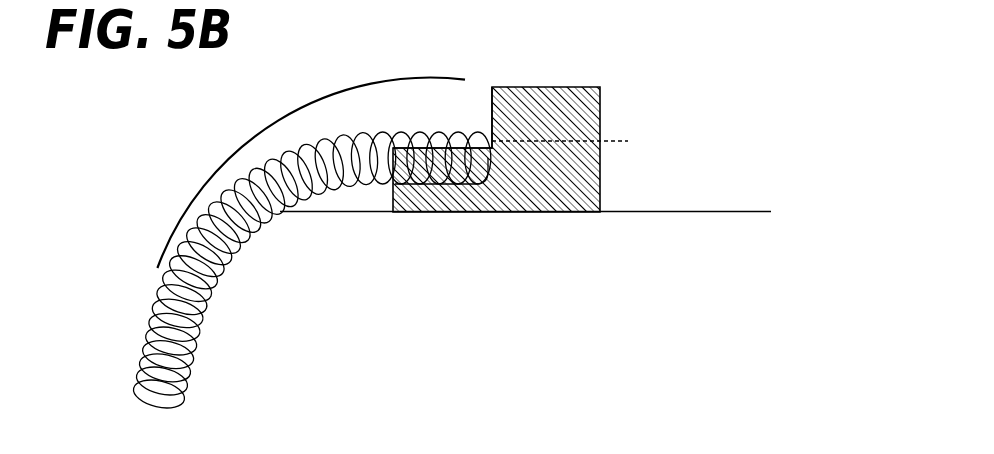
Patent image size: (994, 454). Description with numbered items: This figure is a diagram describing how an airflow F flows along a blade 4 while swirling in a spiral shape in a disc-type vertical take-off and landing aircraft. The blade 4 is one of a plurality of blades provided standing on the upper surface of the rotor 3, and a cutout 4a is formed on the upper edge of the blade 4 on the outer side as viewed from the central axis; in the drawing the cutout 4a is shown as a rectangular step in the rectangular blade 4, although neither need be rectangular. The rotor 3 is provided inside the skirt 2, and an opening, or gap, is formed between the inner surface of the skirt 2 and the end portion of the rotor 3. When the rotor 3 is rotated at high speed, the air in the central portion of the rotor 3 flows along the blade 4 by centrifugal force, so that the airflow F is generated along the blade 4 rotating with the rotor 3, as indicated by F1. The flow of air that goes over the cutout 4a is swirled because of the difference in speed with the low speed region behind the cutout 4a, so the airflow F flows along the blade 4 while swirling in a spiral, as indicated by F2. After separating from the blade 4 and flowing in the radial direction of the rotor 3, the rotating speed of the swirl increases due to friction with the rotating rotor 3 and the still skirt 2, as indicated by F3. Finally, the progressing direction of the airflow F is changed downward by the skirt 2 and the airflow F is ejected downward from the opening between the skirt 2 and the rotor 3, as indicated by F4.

The skirt 2 is at (223, 167).
The rotor 3 is at (737, 211).
The blade 4 is at (523, 98).
The cutout 4a is at (456, 125).
The airflow F is at (574, 146).
The airflow along the blade F1 is at (561, 133).
The spirally swirling airflow along the blade F2 is at (426, 121).
The radially flowing swirling airflow F3 is at (307, 133).
The downward ejected airflow F4 is at (236, 252).